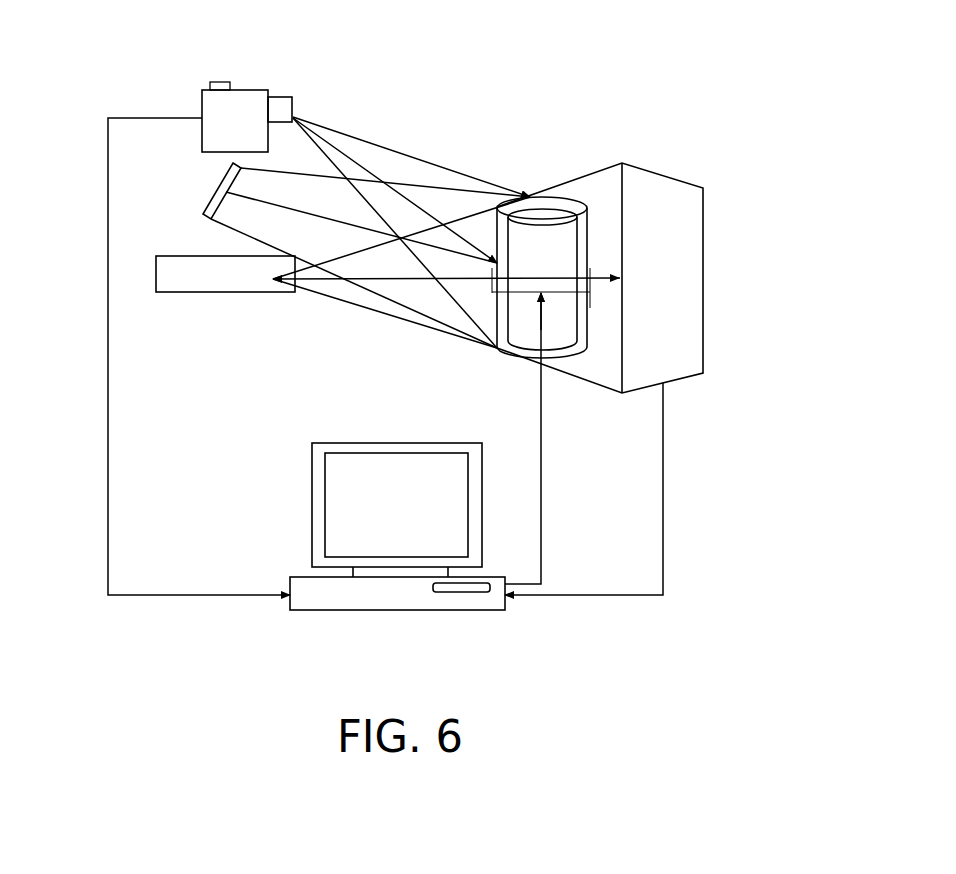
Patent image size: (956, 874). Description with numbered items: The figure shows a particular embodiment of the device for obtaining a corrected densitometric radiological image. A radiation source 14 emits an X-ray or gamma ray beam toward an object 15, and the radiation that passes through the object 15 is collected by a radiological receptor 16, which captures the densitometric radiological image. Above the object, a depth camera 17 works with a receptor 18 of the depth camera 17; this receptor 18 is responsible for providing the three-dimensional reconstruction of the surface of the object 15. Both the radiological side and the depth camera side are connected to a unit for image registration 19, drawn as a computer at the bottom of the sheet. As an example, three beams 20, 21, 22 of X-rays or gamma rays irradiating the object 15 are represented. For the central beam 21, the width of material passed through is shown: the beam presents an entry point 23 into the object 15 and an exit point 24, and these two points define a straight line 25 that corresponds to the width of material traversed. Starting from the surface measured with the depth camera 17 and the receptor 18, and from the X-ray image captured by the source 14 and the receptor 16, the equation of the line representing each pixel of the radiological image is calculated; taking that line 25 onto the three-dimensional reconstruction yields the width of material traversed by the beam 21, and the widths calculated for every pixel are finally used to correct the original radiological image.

The radiation source 14 is at (188, 277).
The object 15 is at (560, 200).
The radiological receptor 16 is at (677, 279).
The depth camera 17 is at (240, 108).
The receptor of the depth camera 18 is at (220, 195).
The unit for image registration 19 is at (333, 600).
The beam 20 is at (363, 247).
The central beam 21 is at (393, 280).
The beam 22 is at (430, 333).
The entry point 23 is at (495, 290).
The exit point 24 is at (590, 292).
The straight line 25 is at (558, 293).